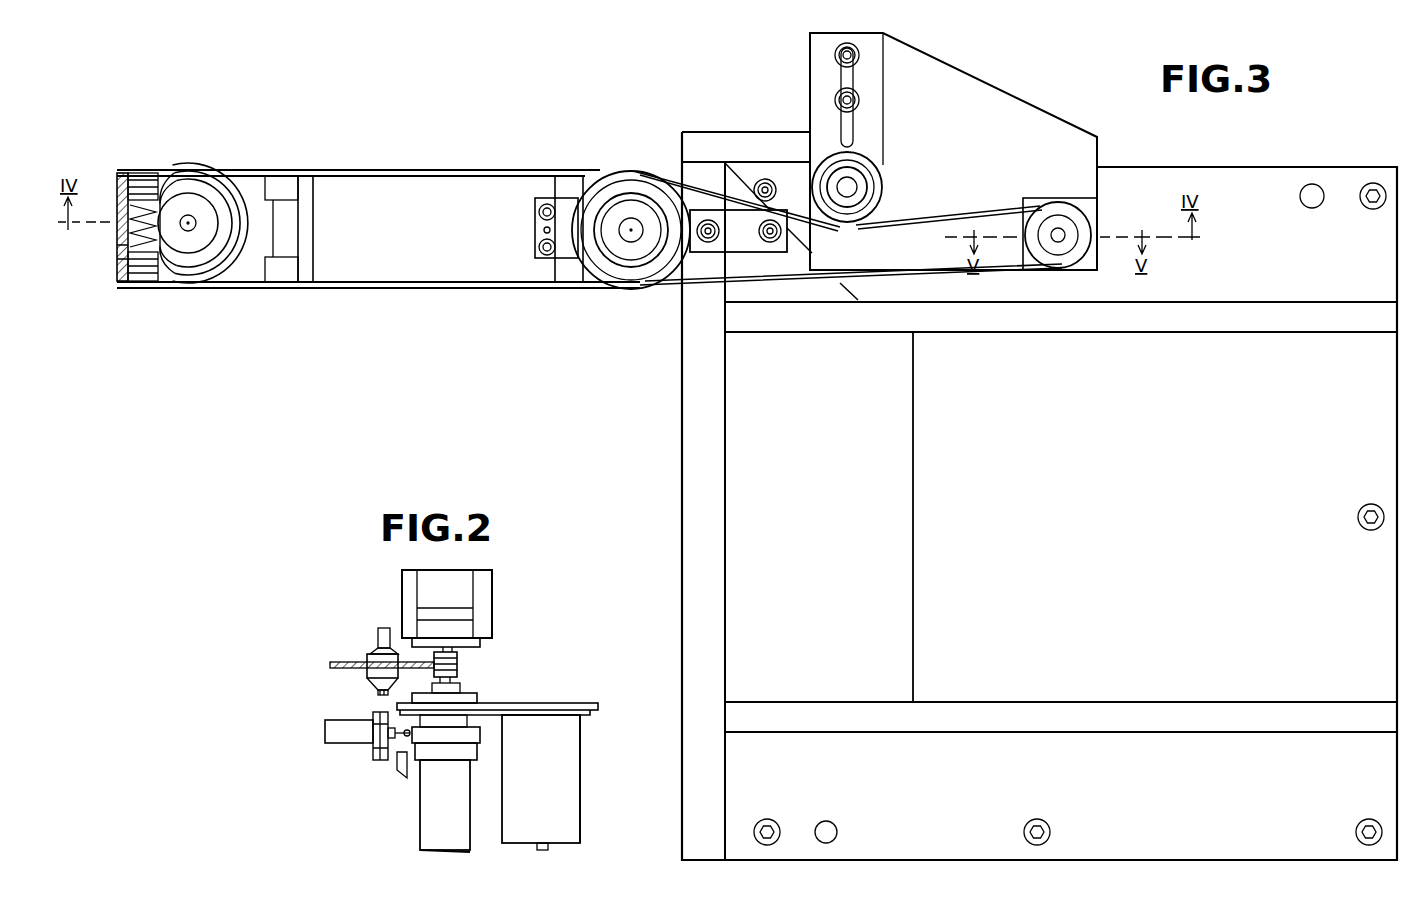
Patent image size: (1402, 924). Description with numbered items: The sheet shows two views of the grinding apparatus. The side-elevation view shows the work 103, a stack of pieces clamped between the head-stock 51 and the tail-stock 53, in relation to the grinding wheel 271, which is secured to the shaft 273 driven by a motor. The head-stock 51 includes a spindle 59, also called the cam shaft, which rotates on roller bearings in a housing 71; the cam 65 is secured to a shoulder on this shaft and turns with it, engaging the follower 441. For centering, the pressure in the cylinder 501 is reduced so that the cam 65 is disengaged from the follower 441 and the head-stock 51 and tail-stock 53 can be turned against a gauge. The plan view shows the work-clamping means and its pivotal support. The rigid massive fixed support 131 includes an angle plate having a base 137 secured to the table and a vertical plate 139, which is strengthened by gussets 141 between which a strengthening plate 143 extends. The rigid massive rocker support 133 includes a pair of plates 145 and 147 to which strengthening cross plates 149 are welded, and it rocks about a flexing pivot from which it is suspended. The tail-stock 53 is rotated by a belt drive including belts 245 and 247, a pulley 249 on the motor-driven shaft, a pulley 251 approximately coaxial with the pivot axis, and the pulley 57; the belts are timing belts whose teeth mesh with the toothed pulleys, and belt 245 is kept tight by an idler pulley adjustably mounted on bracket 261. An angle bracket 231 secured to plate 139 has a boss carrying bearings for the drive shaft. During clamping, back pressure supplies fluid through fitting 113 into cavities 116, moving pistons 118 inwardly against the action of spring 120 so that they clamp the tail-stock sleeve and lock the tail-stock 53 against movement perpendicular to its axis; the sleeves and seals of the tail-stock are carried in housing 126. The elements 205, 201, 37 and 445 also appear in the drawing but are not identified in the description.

In FIG. 3, the fixed support 131 is at (1168, 504).
In FIG. 3, the base 137 is at (1329, 694).
In FIG. 3, the vertical plate 139 is at (722, 541).
In FIG. 3, the gussets 141 is at (1226, 334).
In FIG. 3, the strengthening plate 143 is at (905, 452).
In FIG. 3, the rocker support 133 is at (462, 270).
In FIG. 3, the strengthening cross plates 149 is at (458, 184).
In FIG. 3, the belt 247 is at (522, 172).
In FIG. 3, the pulley 251 is at (637, 206).
In FIG. 3, the belt 245 is at (913, 224).
In FIG. 3, the pulley 249 is at (1058, 264).
In FIG. 3, the bracket 261 is at (856, 102).
In FIG. 3, the angle bracket 231 is at (1089, 186).
In FIG. 3, the plate 145 is at (556, 268).
In FIG. 3, the upper support block 205 is at (282, 193).
In FIG. 3, the lower support block 201 is at (265, 245).
In FIG. 3, the plate 147 is at (312, 221).
In FIG. 3, the pulley 57 is at (188, 202).
In FIG. 3, the pistons 118 is at (159, 205).
In FIG. 3, the fitting 113 is at (114, 187).
In FIG. 3, the cavities 116 is at (134, 186).
In FIG. 3, the spring 120 is at (124, 231).
In FIG. 3, the housing 126 is at (117, 253).
In FIG. 2, the tail-stock 53 is at (457, 599).
In FIG. 2, the work 103 is at (457, 665).
In FIG. 2, the cam 65 is at (482, 712).
In FIG. 2, the follower 441 is at (558, 710).
In FIG. 2, the spindle 59 is at (470, 728).
In FIG. 2, the head-stock 51 is at (458, 809).
In FIG. 2, the housing 71 is at (458, 842).
In FIG. 2, the gear box 37 is at (554, 774).
In FIG. 2, the gear box wall 445 is at (574, 793).
In FIG. 2, the cylinder 501 is at (335, 732).
In FIG. 2, the grinding wheel 271 is at (330, 666).
In FIG. 2, the shaft 273 is at (364, 650).